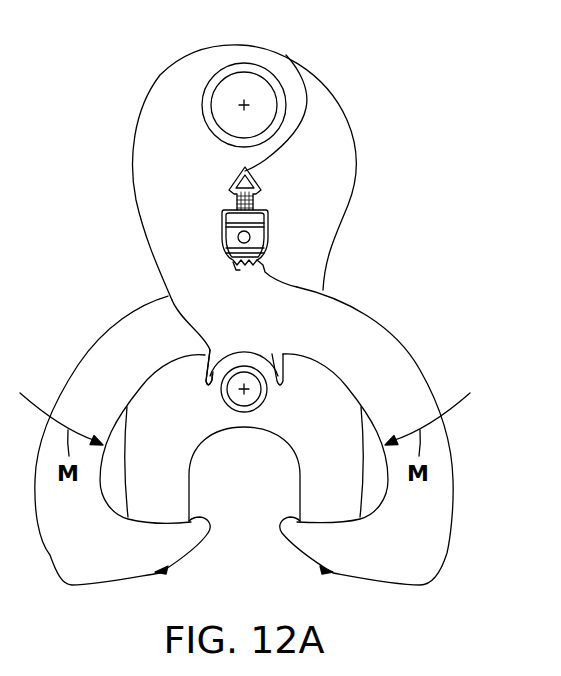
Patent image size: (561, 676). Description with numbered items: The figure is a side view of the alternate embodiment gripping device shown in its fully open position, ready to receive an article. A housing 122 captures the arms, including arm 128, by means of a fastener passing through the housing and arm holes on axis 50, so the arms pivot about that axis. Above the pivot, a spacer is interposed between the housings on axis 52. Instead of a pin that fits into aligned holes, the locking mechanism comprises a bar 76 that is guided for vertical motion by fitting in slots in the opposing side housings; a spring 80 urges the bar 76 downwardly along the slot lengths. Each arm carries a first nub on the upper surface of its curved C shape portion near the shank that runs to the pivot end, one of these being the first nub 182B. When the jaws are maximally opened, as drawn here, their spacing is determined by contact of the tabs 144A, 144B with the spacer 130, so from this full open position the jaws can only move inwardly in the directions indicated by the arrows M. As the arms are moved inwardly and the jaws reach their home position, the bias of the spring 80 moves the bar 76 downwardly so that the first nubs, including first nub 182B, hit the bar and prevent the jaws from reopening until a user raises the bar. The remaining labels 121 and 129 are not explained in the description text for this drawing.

The axis 52 is at (244, 105).
The clamp body 121 is at (386, 144).
The spring 80 is at (238, 202).
The bar 76 is at (250, 237).
The first nub 182B is at (268, 277).
The tab 144B is at (209, 372).
The tab 144A is at (281, 373).
The axis 50 is at (242, 390).
The spacer 130 is at (268, 395).
The housing 122 is at (185, 485).
The left jaw 129 is at (105, 572).
The arm 128 is at (390, 570).